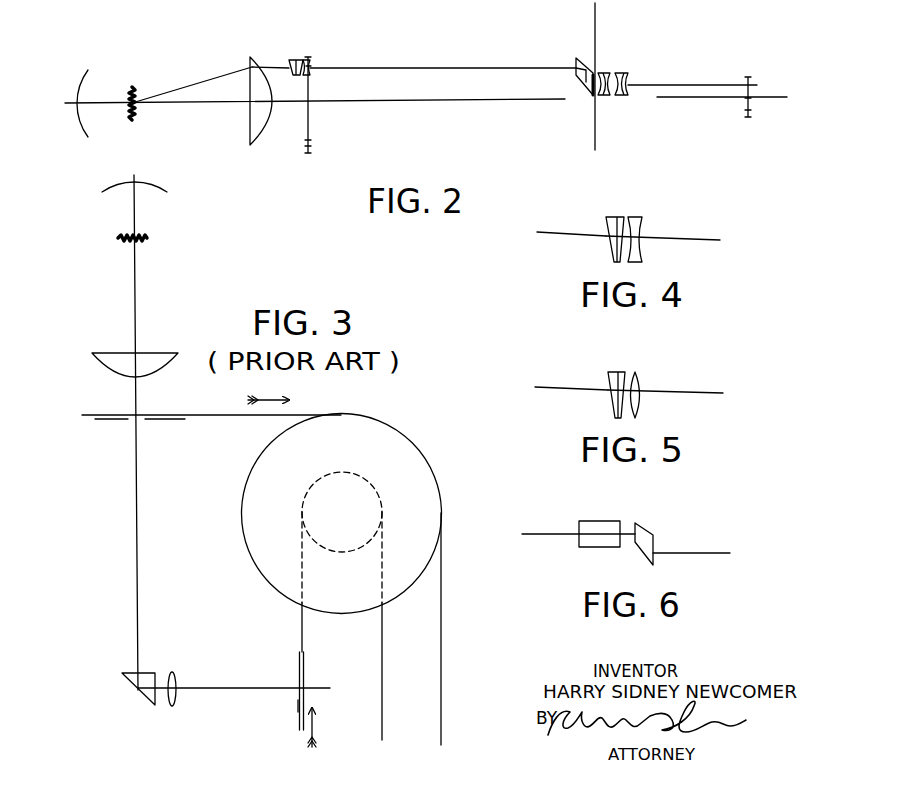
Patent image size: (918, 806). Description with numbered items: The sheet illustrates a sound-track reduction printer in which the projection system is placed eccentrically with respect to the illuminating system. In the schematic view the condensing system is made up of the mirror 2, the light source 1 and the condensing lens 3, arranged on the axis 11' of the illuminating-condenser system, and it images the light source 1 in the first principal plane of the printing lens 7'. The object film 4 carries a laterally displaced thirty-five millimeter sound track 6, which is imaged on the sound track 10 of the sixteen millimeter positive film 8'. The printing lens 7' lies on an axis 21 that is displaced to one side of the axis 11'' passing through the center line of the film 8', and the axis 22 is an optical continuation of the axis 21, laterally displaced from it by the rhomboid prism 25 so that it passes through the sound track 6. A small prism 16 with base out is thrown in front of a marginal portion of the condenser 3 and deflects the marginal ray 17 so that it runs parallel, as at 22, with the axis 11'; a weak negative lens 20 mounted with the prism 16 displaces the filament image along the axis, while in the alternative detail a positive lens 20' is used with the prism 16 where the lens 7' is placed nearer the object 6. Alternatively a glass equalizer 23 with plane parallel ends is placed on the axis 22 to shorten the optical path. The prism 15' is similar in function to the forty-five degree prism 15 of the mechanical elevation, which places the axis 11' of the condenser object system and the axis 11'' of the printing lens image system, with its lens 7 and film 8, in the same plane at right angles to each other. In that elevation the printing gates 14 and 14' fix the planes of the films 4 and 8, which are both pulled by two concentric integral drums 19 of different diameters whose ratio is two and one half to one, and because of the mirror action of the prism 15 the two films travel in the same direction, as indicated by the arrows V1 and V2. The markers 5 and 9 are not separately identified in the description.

In FIG. 2, the light source 1 is at (133, 115).
In FIG. 3, the light source 1 is at (140, 240).
In FIG. 2, the mirror 2 is at (88, 109).
In FIG. 3, the mirror 2 is at (141, 193).
In FIG. 2, the condensing lens 3 is at (253, 101).
In FIG. 3, the condensing lens 3 is at (143, 358).
In FIG. 2, the film 4 is at (306, 140).
In FIG. 3, the film 4 is at (175, 414).
In FIG. 2, the aperture plate 5 is at (309, 105).
In FIG. 2, the sound track 6 is at (310, 67).
In FIG. 3, the lens 7 is at (184, 697).
In FIG. 2, the printing lens 7' is at (613, 96).
In FIG. 3, the film 8 is at (316, 689).
In FIG. 2, the positive film 8' is at (730, 132).
In FIG. 2, the aperture 9 is at (746, 98).
In FIG. 2, the sound track 10 is at (750, 80).
In FIG. 2, the axis 11' is at (315, 120).
In FIG. 3, the axis 11' is at (156, 432).
In FIG. 2, the axis 11'' is at (722, 115).
In FIG. 3, the axis 11'' is at (249, 704).
In FIG. 3, the printing gate 14 is at (145, 435).
In FIG. 3, the printing gate 14' is at (277, 718).
In FIG. 3, the 45° prism 15 is at (159, 677).
In FIG. 2, the prism 15' is at (616, 76).
In FIG. 2, the prism 16 is at (292, 60).
In FIG. 4, the prism 16 is at (614, 220).
In FIG. 5, the prism 16 is at (614, 374).
In FIG. 2, the ray 17 is at (272, 66).
In FIG. 4, the ray 17 is at (555, 232).
In FIG. 5, the ray 17 is at (554, 388).
In FIG. 3, the concentric integral drums 19 is at (342, 577).
In FIG. 2, the weak negative lens 20 is at (328, 49).
In FIG. 4, the weak negative lens 20 is at (656, 225).
In FIG. 5, the positive lens 20' is at (659, 381).
In FIG. 2, the axis 21 is at (683, 83).
In FIG. 6, the axis 21 is at (713, 555).
In FIG. 2, the axis 22 is at (443, 67).
In FIG. 4, the axis 22 is at (700, 240).
In FIG. 5, the axis 22 is at (710, 395).
In FIG. 6, the axis 22 is at (533, 533).
In FIG. 6, the glass equalizer 23 is at (592, 546).
In FIG. 2, the rhomboid prism 25 is at (578, 72).
In FIG. 6, the rhomboid prism 25 is at (650, 543).
In FIG. 3, the velocity of slit V1 is at (282, 404).
In FIG. 3, the velocity of image V2 is at (325, 737).